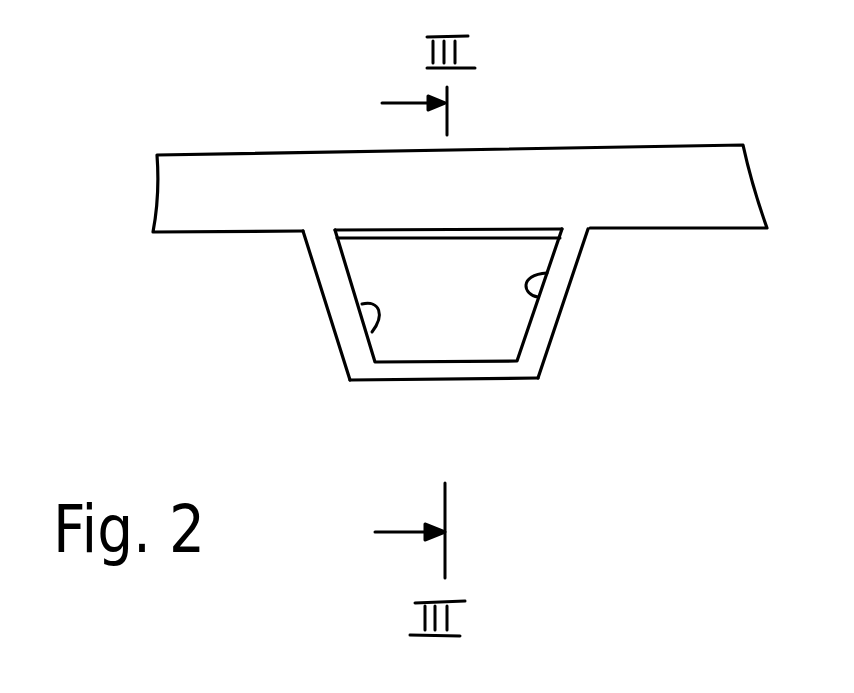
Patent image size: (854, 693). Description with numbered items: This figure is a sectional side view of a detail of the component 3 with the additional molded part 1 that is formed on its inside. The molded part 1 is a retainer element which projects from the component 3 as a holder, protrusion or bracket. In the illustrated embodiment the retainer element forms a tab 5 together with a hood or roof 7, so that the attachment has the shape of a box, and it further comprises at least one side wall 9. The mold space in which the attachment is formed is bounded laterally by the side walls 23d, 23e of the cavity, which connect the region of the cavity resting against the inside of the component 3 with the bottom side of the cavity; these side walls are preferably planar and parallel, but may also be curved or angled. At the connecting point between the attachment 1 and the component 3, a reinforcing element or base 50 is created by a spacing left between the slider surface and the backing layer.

The molded part 1 is at (605, 336).
The component 3 is at (683, 150).
The tab 5 is at (500, 342).
The roof 7 is at (390, 370).
The side wall 9 is at (330, 273).
The side wall of the cavity 23d is at (538, 297).
The side wall of the cavity 23e is at (372, 332).
The base 50 is at (507, 233).